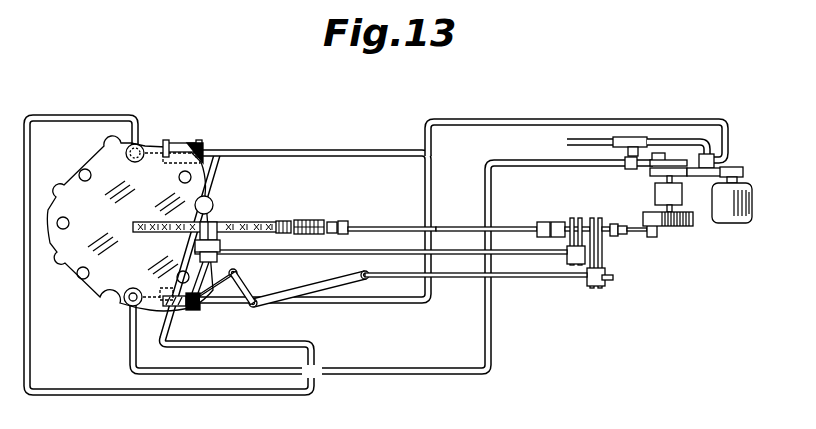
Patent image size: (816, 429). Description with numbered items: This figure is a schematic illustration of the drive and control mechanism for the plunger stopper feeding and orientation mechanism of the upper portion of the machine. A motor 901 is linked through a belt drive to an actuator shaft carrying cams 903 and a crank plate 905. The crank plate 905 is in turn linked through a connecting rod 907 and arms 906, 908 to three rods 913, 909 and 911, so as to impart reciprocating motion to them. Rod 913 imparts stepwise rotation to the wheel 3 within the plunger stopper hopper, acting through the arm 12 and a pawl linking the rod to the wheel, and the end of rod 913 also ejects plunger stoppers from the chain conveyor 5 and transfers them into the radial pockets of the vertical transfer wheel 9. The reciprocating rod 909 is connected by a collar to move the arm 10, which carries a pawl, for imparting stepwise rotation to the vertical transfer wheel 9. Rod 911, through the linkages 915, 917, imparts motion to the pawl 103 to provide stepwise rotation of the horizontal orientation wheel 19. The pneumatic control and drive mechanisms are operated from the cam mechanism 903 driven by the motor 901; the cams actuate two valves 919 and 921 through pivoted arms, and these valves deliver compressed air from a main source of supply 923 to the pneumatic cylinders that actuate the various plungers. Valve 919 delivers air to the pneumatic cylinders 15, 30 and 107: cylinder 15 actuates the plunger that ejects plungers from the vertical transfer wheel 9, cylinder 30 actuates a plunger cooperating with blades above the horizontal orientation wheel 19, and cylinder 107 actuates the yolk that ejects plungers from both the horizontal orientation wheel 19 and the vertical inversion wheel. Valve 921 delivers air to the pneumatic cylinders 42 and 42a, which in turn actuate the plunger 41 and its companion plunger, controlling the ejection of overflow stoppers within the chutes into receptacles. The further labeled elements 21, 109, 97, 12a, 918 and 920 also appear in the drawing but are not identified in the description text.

The horizontal orientation wheel 19 is at (93, 163).
The pin 21 is at (80, 277).
The pneumatic cylinder 30 is at (138, 146).
The plunger 41 is at (141, 150).
The pneumatic cylinder 42 is at (188, 146).
The pneumatic cylinder 42a is at (237, 260).
The pneumatic cylinder 15 is at (206, 199).
The arm 10 is at (235, 228).
The arm 109 is at (213, 222).
The vertical transfer wheel 9 is at (249, 222).
The chain conveyor 5 is at (281, 221).
The spring 97 is at (301, 220).
The arm 12 is at (332, 222).
The coupling 12a is at (365, 236).
The wheel 3 is at (374, 226).
The rod 913 is at (433, 227).
The reciprocating rod 909 is at (440, 251).
The rod 911 is at (430, 279).
The pawl 103 is at (214, 263).
The linkage 915 is at (246, 290).
The linkage 917 is at (658, 141).
The pneumatic cylinder 107 is at (123, 300).
The pipe 918 is at (489, 342).
The pipe 920 is at (521, 121).
The main source of supply 923 is at (566, 142).
The valve 919 is at (626, 167).
The valve 921 is at (714, 157).
The cams 903 is at (665, 158).
The crank plate 905 is at (673, 227).
The motor 901 is at (733, 214).
The arm 906 is at (576, 220).
The connecting rod 907 is at (637, 233).
The arm 908 is at (594, 262).